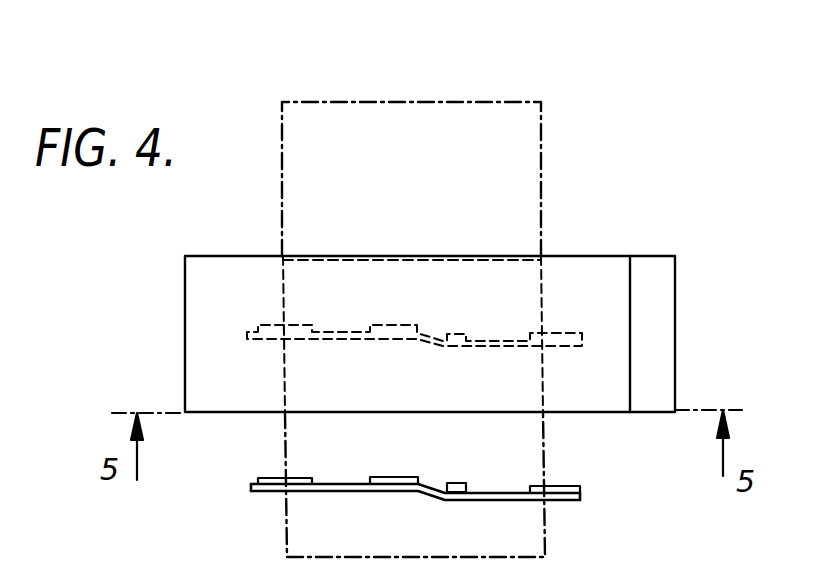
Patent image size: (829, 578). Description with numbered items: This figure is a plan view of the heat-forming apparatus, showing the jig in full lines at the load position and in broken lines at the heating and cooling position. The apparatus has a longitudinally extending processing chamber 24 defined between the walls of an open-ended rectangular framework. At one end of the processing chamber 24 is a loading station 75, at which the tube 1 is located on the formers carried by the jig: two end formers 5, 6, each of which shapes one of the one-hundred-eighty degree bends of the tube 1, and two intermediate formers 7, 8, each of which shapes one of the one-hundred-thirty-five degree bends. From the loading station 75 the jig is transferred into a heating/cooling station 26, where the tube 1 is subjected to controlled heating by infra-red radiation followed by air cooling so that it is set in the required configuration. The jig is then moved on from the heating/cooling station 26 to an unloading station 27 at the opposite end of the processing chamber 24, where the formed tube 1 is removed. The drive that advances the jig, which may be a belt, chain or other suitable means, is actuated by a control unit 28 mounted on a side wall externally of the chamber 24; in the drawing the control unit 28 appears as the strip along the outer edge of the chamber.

The tube 1 is at (338, 481).
The end former 5 is at (266, 480).
The end former 6 is at (551, 488).
The intermediate former 7 is at (459, 483).
The intermediate former 8 is at (400, 477).
The processing chamber 24 is at (327, 283).
The heating/cooling station 26 is at (414, 334).
The unloading station 27 is at (411, 179).
The control unit 28 is at (657, 320).
The loading station 75 is at (415, 484).